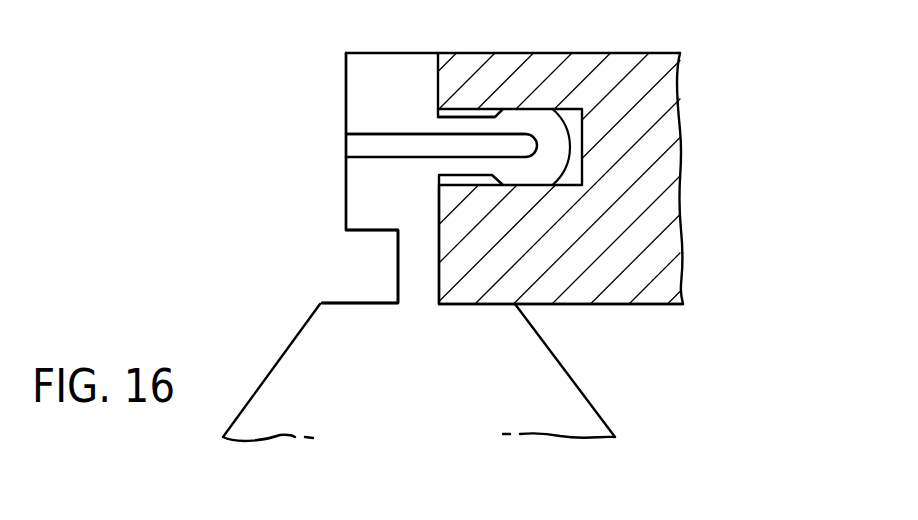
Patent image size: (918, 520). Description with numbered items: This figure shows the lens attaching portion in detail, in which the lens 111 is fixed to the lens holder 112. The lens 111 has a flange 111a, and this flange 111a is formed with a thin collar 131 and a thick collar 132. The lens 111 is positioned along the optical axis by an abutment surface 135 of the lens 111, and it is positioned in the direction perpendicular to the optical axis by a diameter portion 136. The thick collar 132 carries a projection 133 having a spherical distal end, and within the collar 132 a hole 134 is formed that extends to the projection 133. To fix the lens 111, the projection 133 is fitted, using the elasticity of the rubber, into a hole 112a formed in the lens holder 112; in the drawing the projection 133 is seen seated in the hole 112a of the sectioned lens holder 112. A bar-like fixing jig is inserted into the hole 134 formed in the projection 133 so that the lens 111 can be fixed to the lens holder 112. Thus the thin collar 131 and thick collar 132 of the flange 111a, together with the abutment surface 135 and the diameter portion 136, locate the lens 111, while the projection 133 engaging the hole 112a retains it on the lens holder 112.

The lens 111 is at (577, 416).
The flange 111a is at (312, 215).
The lens holder 112 is at (640, 54).
The hole 112a is at (573, 122).
The thin collar 131 is at (413, 267).
The thick collar 132 is at (370, 93).
The projection 133 is at (523, 122).
The hole 134 is at (360, 147).
The abutment surface 135 is at (440, 270).
The diameter portion 136 is at (497, 304).